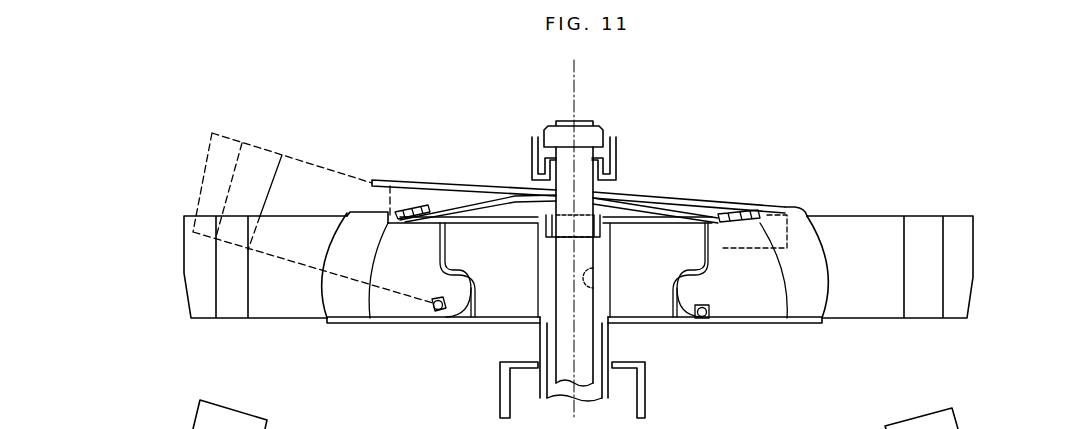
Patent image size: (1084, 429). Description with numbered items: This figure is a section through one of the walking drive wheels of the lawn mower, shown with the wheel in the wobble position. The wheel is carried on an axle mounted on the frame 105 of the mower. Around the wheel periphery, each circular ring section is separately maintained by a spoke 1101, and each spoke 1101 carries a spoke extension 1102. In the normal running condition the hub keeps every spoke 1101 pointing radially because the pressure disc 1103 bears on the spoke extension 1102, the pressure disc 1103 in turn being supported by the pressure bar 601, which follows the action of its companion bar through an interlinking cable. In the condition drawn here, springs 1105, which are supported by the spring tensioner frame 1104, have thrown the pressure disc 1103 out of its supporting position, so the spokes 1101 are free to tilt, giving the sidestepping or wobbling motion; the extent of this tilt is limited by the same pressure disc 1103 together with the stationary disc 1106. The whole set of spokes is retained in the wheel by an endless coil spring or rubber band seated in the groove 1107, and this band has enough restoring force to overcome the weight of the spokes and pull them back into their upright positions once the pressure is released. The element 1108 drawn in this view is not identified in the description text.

The frame 105 is at (645, 400).
The pressure bar 601 is at (532, 143).
The spoke 1101 is at (295, 162).
The spoke extension 1102 is at (797, 207).
The pressure disc 1103 is at (677, 197).
The spring tensioner frame 1104 is at (640, 202).
The spring 1105 is at (405, 215).
The stationary disc 1106 is at (357, 323).
The groove 1107 is at (443, 310).
The housing 1108 is at (189, 306).